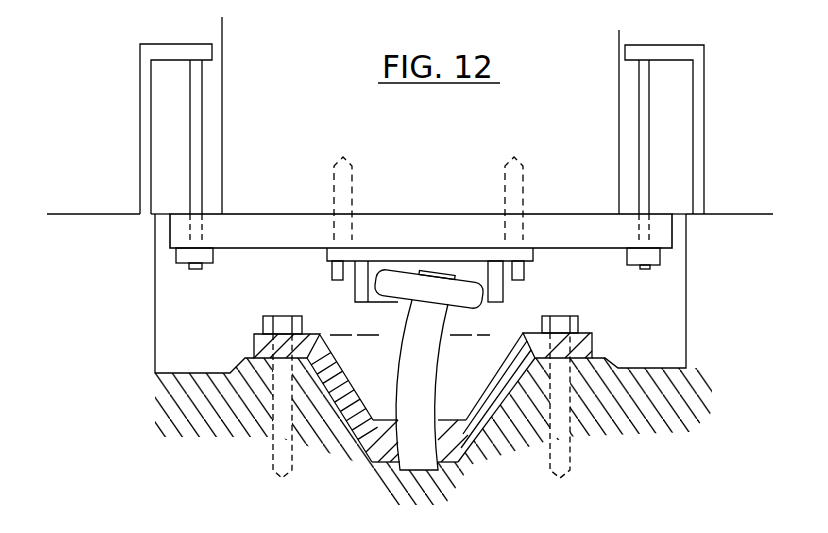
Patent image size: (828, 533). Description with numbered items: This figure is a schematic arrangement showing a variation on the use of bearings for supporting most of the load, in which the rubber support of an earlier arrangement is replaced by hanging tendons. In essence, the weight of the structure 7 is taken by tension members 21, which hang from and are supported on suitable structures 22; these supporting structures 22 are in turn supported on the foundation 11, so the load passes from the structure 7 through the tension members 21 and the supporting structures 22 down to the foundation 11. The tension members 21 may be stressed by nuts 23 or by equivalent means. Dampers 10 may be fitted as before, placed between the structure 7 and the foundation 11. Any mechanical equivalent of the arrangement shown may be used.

The structure 7 is at (421, 210).
The damper 10 is at (426, 365).
The foundation 11 is at (385, 293).
The tension member 21 is at (198, 142).
The suitable structure 22 is at (147, 137).
The nut 23 is at (205, 255).